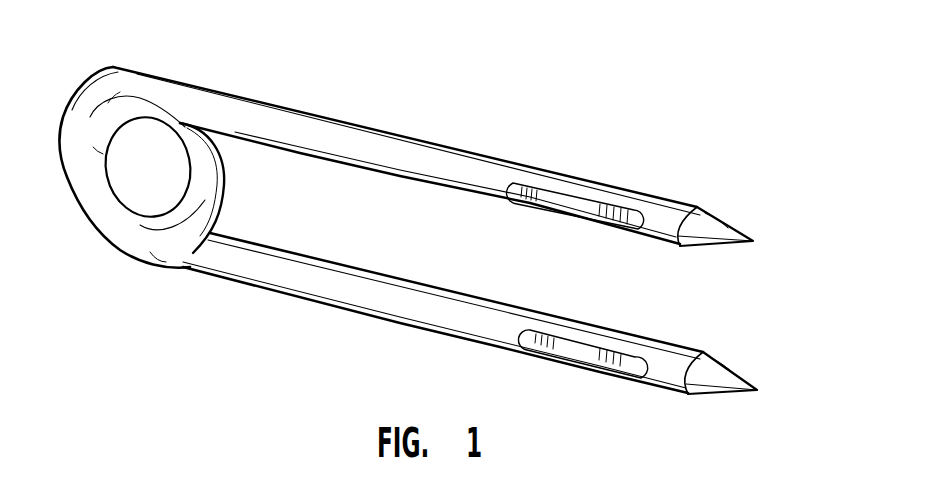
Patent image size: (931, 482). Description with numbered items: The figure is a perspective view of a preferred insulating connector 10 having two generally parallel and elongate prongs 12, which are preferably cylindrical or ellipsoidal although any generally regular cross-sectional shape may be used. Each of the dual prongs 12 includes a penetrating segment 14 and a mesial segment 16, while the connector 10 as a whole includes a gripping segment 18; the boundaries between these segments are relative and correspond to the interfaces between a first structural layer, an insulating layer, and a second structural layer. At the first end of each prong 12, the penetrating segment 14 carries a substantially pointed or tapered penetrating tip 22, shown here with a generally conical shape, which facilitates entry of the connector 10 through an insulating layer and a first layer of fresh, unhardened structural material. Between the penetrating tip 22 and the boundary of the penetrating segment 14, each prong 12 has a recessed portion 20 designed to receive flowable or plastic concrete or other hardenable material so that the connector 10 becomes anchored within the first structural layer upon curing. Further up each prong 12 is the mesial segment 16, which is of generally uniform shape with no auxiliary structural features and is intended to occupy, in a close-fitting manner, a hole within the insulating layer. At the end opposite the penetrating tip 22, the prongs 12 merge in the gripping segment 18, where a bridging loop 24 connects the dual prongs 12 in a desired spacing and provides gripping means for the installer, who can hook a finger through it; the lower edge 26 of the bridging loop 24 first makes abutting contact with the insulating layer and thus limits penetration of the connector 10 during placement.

The connector 10 is at (442, 226).
The prongs 12 is at (484, 226).
The penetrating segment 14 is at (670, 373).
The mesial segment 16 is at (402, 158).
The gripping segment 18 is at (178, 103).
The recessed portion 20 is at (553, 200).
The penetrating tip 22 is at (730, 293).
The bridging loop 24 is at (100, 207).
The lower edge 26 is at (230, 183).